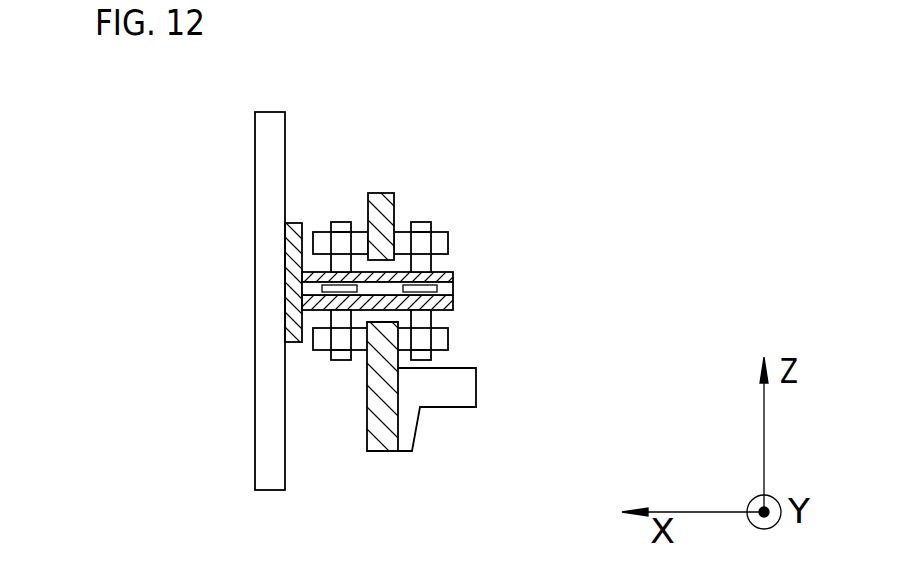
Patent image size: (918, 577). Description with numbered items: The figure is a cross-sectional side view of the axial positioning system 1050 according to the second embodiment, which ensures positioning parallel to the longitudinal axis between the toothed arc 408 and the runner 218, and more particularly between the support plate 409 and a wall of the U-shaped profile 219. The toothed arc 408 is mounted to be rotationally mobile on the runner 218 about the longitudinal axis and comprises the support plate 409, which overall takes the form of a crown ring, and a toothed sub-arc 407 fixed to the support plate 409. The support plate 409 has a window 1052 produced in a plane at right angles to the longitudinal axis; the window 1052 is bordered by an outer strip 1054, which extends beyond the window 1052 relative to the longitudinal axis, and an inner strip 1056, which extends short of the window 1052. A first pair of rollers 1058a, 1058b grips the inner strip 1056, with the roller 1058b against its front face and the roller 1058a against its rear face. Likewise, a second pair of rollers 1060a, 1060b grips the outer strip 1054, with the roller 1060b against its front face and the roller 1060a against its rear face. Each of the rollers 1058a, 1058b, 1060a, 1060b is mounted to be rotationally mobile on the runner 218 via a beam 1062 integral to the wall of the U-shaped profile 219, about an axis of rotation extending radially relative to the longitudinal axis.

The runner 218 is at (210, 218).
The U-shaped profile 219 is at (268, 129).
The toothed sub-arc 407 is at (470, 378).
The toothed arc 408 is at (601, 306).
The support plate 409 is at (378, 437).
The axial positioning system 1050 is at (598, 204).
The window 1052 is at (385, 266).
The outer strip 1054 is at (394, 193).
The inner strip 1056 is at (383, 343).
The roller of the first pair 1058a is at (440, 338).
The roller of the first pair 1058b is at (322, 341).
The roller of the second pair 1060a is at (440, 240).
The roller of the second pair 1060b is at (320, 243).
The beam 1062 is at (305, 293).